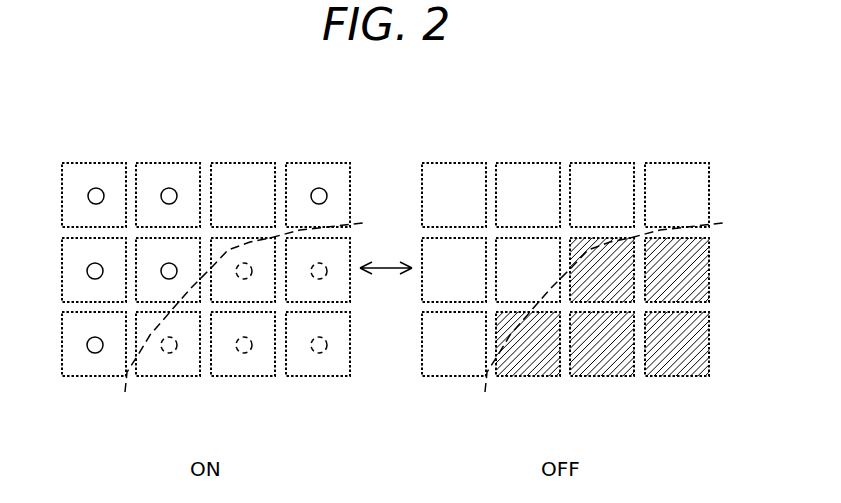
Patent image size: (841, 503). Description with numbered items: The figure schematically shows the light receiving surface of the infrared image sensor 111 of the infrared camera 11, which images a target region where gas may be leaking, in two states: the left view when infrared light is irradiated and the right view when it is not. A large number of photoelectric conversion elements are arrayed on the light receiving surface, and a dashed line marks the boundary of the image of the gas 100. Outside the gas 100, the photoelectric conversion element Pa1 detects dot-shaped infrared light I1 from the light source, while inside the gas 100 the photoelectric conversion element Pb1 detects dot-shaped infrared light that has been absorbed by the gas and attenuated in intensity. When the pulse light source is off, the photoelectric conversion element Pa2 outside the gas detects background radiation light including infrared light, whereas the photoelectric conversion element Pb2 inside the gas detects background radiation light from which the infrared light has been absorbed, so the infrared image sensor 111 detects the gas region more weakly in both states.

The photoelectric conversion element outside the gas Pa1 is at (76, 162).
The image light I1 is at (96, 188).
The gas 100 is at (232, 256).
The infrared image sensor 111 is at (313, 118).
The infrared camera 11 is at (168, 353).
The photoelectric conversion element inside the gas Pb1 is at (190, 376).
The photoelectric conversion element outside the gas Pa2 is at (434, 162).
The photoelectric conversion element inside the gas Pb2 is at (603, 377).